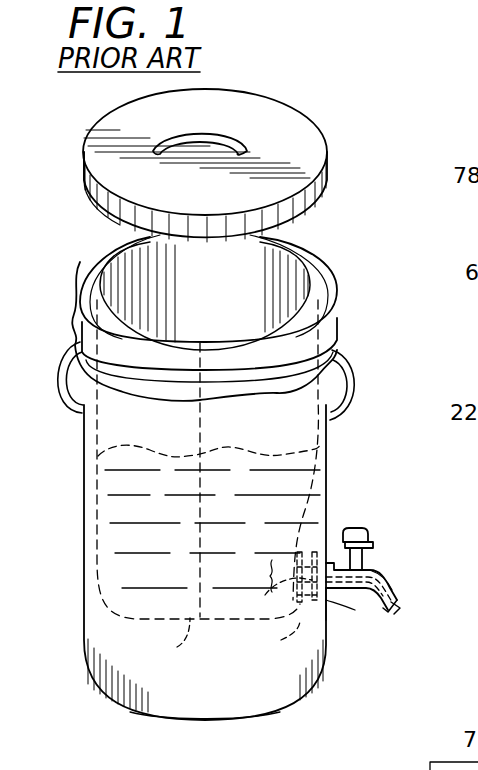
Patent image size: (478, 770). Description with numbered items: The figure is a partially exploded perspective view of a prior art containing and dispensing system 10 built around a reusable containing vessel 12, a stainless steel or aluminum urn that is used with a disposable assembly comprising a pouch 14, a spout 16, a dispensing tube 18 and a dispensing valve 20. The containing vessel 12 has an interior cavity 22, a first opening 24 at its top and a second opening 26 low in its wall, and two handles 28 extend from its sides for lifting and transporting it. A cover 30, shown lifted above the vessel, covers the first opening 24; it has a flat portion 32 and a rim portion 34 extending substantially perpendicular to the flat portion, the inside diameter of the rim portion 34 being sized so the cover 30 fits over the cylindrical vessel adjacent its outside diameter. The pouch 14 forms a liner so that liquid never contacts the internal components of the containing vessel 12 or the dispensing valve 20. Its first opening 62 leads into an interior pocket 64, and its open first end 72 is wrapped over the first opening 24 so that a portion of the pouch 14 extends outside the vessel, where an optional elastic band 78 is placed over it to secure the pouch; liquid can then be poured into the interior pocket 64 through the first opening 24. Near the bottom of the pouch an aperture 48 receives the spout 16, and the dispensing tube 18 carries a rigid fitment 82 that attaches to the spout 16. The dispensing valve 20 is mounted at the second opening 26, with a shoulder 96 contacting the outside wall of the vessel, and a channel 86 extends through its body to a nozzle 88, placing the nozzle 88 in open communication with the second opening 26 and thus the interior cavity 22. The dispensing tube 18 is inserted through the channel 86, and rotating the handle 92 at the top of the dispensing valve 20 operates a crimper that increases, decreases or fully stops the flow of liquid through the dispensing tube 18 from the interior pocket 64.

The containing and dispensing system 10 is at (364, 143).
The containing vessel 12 is at (84, 640).
The pouch 14 is at (177, 647).
The spout 16 is at (281, 640).
The dispensing tube 18 is at (394, 612).
The dispensing valve 20 is at (372, 566).
The interior cavity 22 is at (210, 684).
The first opening 24 is at (284, 270).
The second opening 26 is at (324, 597).
The handles 28 is at (65, 378).
The cover 30 is at (305, 108).
The flat portion 32 is at (120, 123).
The rim portion 34 is at (83, 178).
The aperture 48 is at (267, 591).
The first opening 62 is at (192, 258).
The interior pocket 64 is at (316, 510).
The first end 72 is at (335, 345).
The elastic band 78 is at (336, 326).
The fitment 82 is at (335, 526).
The channel 86 is at (399, 600).
The nozzle 88 is at (388, 598).
The handle 92 is at (368, 531).
The shoulder 96 is at (332, 598).